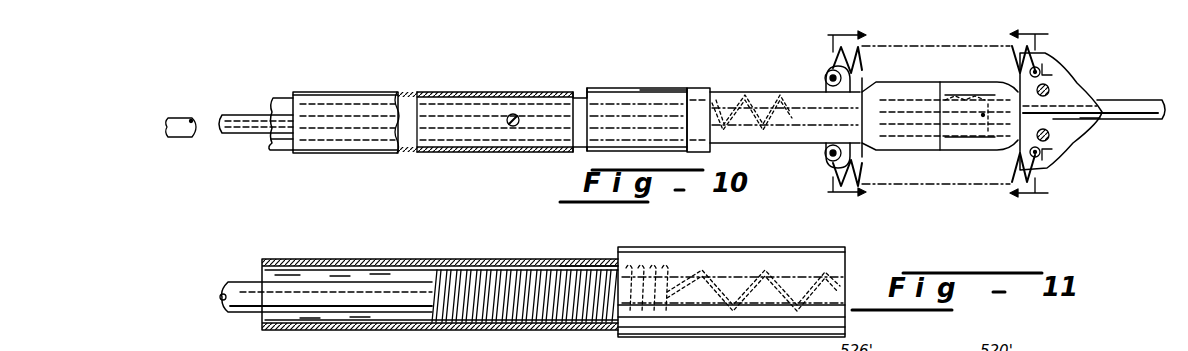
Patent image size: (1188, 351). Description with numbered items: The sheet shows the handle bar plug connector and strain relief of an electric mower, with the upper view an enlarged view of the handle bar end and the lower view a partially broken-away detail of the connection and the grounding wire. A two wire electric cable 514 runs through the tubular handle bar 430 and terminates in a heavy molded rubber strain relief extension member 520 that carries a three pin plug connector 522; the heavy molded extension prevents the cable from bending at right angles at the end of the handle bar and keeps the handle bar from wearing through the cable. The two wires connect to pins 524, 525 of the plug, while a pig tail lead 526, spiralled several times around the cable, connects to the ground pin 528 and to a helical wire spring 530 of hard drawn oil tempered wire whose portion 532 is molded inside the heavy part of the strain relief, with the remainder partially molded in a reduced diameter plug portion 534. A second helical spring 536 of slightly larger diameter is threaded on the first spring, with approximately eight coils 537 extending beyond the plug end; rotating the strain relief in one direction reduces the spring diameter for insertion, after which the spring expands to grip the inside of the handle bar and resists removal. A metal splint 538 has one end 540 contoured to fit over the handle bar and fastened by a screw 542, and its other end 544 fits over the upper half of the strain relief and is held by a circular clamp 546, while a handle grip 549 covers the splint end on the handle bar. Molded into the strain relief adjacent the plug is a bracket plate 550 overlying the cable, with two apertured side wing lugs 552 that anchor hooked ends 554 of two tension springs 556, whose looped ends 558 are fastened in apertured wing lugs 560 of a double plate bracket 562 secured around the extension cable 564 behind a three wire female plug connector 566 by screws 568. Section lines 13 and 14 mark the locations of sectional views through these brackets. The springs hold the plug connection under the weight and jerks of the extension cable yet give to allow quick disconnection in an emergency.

In FIG. 10, the section line 13- 13 is at (833, 113).
In FIG. 10, the section line 14- 14 is at (1049, 111).
In FIG. 10, the handle bar 430 is at (290, 152).
In FIG. 11, the handle bar 430 is at (382, 258).
In FIG. 10, the two wire electric cable 514 is at (250, 133).
In FIG. 11, the two wire electric cable 514 is at (246, 308).
In FIG. 10, the strain relief extension member 520 is at (722, 92).
In FIG. 11, the strain relief extension member 520 is at (756, 239).
In FIG. 10, the three pin plug connector 522 is at (911, 140).
In FIG. 10, the pin 524 is at (971, 96).
In FIG. 10, the pin 525 is at (959, 138).
In FIG. 10, the pig tail lead 526 is at (754, 130).
In FIG. 11, the pig tail lead 526 is at (852, 262).
In FIG. 10, the ground pin 528 is at (988, 137).
In FIG. 11, the helical wire spring 530 is at (597, 260).
In FIG. 11, the molded portion of spring 532 is at (652, 260).
In FIG. 11, the reduced diameter plug portion 534 is at (578, 263).
In FIG. 11, the second helical spring 536 is at (502, 261).
In FIG. 11, the coils 537 is at (468, 261).
In FIG. 10, the metal splint 538 is at (620, 88).
In FIG. 10, the end of splint 540 is at (455, 102).
In FIG. 10, the screw 542 is at (517, 114).
In FIG. 10, the other end of splint 544 is at (668, 88).
In FIG. 10, the circular clamp 546 is at (699, 140).
In FIG. 10, the handle grip 549 is at (388, 92).
In FIG. 10, the bracket plate 550 is at (826, 153).
In FIG. 10, the apertured side wing lugs 552 is at (828, 75).
In FIG. 10, the hooked ends 554 is at (860, 178).
In FIG. 10, the tension springs 556 is at (908, 48).
In FIG. 10, the looped ends 558 is at (1016, 182).
In FIG. 10, the apertured wing lugs 560 is at (1056, 154).
In FIG. 10, the double plate bracket 562 is at (1082, 131).
In FIG. 10, the extension cable 564 is at (1134, 107).
In FIG. 10, the three wire female plug connector 566 is at (1007, 58).
In FIG. 10, the screws 568 is at (1046, 130).